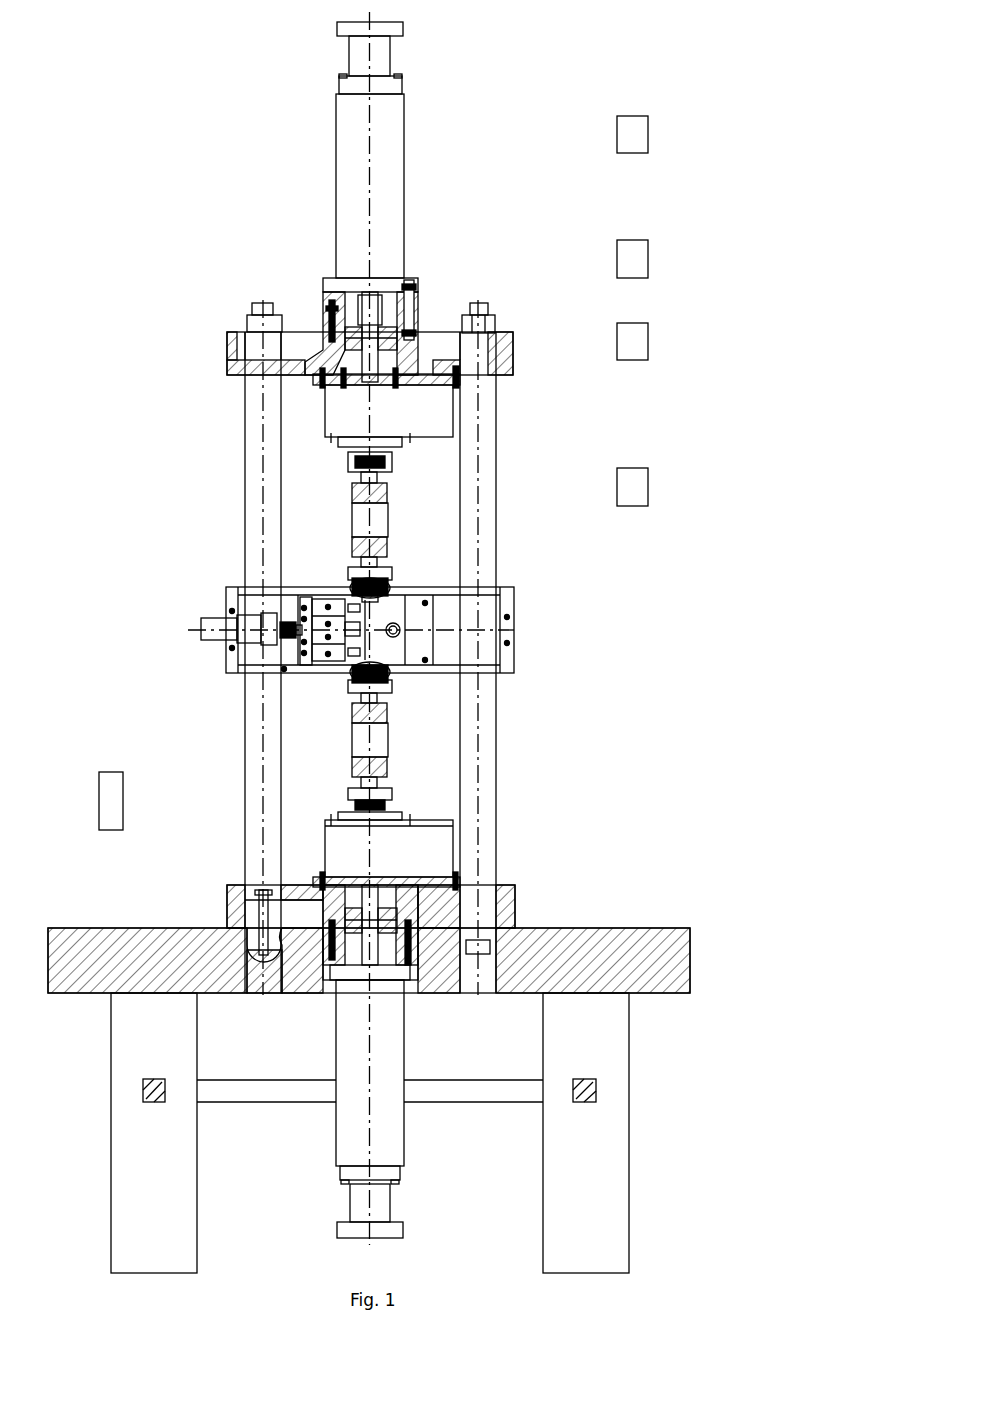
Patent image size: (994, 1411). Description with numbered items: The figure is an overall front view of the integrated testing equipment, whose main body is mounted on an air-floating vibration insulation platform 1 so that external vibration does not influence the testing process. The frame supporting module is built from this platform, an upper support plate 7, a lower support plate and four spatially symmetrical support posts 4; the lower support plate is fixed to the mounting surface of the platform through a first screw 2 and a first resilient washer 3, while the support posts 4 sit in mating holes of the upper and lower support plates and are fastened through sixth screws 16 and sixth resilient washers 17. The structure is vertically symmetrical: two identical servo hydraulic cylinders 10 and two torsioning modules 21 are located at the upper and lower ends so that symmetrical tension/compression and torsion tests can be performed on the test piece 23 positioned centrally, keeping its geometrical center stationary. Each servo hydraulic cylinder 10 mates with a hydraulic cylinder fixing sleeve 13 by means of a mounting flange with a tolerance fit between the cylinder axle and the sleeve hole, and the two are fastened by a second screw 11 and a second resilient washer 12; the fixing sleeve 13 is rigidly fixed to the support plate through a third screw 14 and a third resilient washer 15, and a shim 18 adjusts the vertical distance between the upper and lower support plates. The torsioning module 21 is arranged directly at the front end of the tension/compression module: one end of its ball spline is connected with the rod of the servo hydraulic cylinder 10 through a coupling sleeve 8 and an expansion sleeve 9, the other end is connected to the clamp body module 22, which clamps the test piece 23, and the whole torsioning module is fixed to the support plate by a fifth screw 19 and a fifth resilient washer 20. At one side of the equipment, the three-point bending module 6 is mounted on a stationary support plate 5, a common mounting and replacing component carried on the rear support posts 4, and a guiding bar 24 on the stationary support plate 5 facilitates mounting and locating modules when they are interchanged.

The air-floating vibration insulation platform 1 is at (369, 1060).
The first screw 2 is at (190, 867).
The first resilient washer 3 is at (307, 834).
The support post 4 is at (297, 662).
The stationary support plate 5 is at (200, 624).
The three-point bending module 6 is at (306, 580).
The upper support plate 7 is at (306, 318).
The coupling sleeve 8 is at (222, 285).
The expansion sleeve 9 is at (258, 230).
The servo hydraulic cylinder 10 is at (495, 148).
The second screw 11 is at (528, 212).
The second resilient washer 12 is at (525, 245).
The hydraulic cylinder fixing sleeve 13 is at (499, 257).
The third screw 14 is at (506, 295).
The third resilient washer 15 is at (490, 291).
The sixth screw 16 is at (562, 307).
The sixth resilient washer 17 is at (558, 338).
The shim 18 is at (553, 391).
The fifth screw 19 is at (483, 418).
The fifth resilient washer 20 is at (489, 445).
The torsioning module 21 is at (501, 488).
The clamp body module 22 is at (501, 621).
The test piece 23 is at (477, 666).
The guiding bar 24 is at (485, 741).